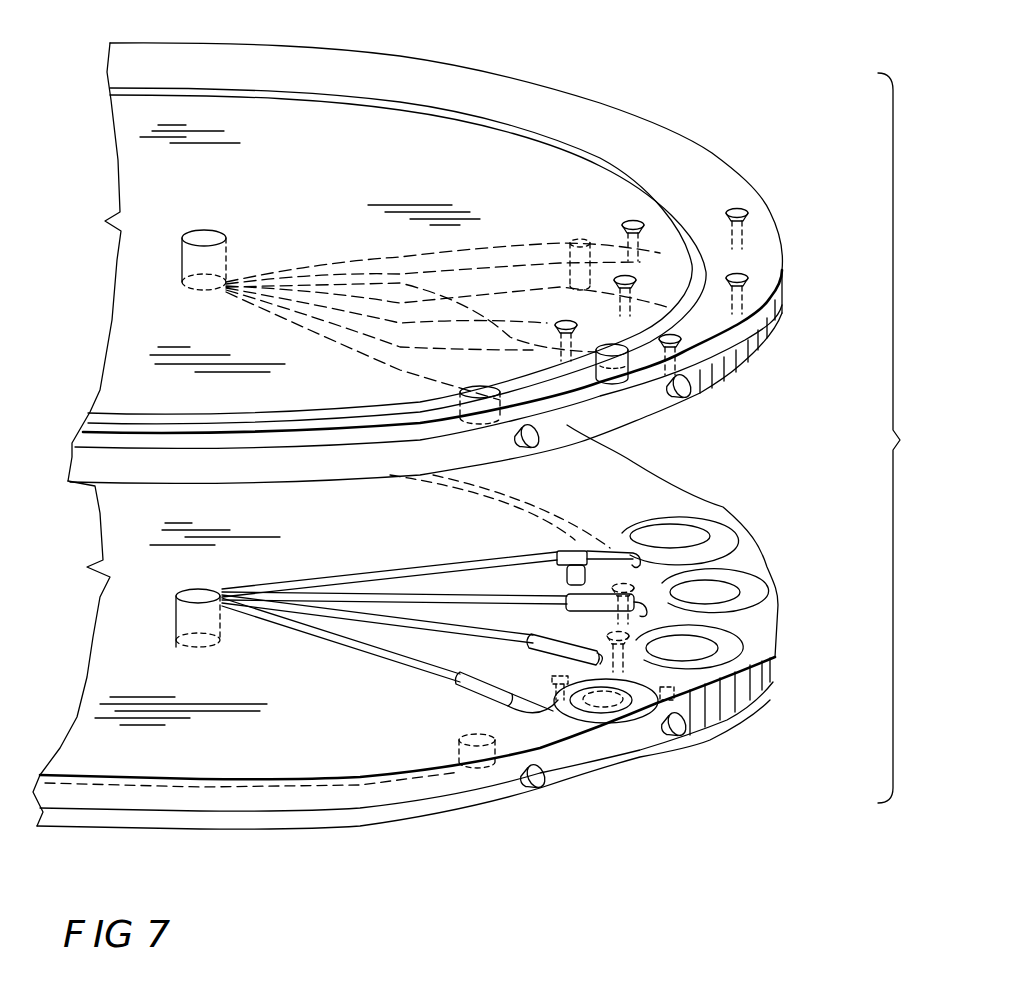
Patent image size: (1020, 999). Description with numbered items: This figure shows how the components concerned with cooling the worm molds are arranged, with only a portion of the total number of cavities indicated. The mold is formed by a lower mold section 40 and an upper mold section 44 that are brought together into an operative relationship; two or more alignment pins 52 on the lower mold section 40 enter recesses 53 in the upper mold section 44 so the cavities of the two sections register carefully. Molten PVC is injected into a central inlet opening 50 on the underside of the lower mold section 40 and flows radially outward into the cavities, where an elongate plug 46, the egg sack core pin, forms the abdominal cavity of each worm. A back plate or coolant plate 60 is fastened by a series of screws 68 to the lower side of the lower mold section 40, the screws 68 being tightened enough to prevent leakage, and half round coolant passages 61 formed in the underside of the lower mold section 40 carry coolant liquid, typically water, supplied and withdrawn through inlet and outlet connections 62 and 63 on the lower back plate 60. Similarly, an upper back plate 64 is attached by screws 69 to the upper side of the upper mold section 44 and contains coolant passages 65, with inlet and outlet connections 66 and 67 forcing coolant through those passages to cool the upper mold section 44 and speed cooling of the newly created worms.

The lower mold section 40 is at (317, 807).
The upper mold section 44 is at (767, 312).
The elongate plug 46 is at (487, 700).
The inlet opening 50 is at (193, 603).
The alignment pins 52 is at (580, 553).
The recesses 53 is at (580, 243).
The back plate 60 is at (237, 827).
The coolant passages 61 is at (103, 783).
The inlet connection 62 is at (540, 779).
The outlet connection 63 is at (685, 728).
The upper back plate 64 is at (712, 153).
The coolant passages 65 is at (273, 90).
The inlet connection 66 is at (540, 433).
The outlet connection 67 is at (690, 388).
The screws 68 is at (773, 612).
The screws 69 is at (738, 272).